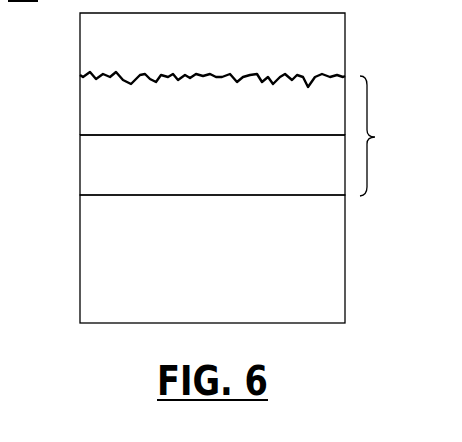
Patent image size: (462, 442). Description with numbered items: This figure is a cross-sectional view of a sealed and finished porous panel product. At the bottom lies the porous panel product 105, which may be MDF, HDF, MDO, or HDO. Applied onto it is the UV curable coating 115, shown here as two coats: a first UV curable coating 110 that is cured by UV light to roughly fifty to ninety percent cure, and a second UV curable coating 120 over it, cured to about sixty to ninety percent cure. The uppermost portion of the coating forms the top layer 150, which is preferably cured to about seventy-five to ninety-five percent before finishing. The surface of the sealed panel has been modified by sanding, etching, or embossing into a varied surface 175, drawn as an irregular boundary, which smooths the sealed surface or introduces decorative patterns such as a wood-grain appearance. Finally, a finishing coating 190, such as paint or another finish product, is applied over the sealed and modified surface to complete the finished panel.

The porous panel product 105 is at (130, 312).
The first UV curable coating 110 is at (130, 182).
The UV curable coating 115 is at (390, 136).
The second UV curable coating 120 is at (212, 107).
The top layer 150 is at (335, 96).
The varied surface 175 is at (104, 84).
The finishing coating 190 is at (130, 50).